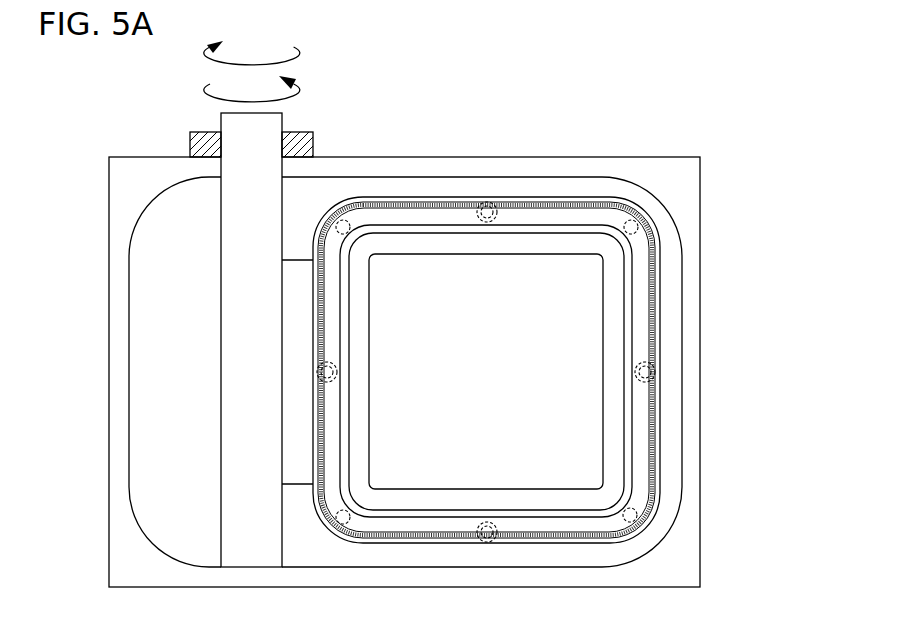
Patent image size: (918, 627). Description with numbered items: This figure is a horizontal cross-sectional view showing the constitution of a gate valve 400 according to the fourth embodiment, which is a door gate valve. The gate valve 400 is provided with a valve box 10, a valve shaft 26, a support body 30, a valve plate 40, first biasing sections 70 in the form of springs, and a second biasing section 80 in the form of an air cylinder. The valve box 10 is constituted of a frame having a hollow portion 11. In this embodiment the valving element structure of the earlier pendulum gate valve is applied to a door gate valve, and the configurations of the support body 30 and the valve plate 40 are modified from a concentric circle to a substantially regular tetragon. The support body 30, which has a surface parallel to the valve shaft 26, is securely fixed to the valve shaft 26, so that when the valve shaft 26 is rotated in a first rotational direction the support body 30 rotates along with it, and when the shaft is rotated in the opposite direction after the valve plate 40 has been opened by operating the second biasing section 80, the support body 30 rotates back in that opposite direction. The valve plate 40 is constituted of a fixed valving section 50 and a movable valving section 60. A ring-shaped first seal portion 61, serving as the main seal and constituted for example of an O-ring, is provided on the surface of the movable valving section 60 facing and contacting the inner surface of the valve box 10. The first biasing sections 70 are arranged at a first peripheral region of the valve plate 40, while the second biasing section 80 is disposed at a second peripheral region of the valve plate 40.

The gate valve 400 is at (706, 129).
The valve box 10 is at (342, 165).
The hollow portion 11 is at (180, 207).
The valve shaft 26 is at (252, 333).
The support body 30 is at (301, 472).
The valve plate 40 is at (763, 402).
The fixed valving section 50 is at (590, 398).
The movable valving section 60 is at (640, 437).
The first seal portion 61 is at (568, 537).
The first biasing sections 70 is at (368, 543).
The second biasing section 80 is at (443, 497).